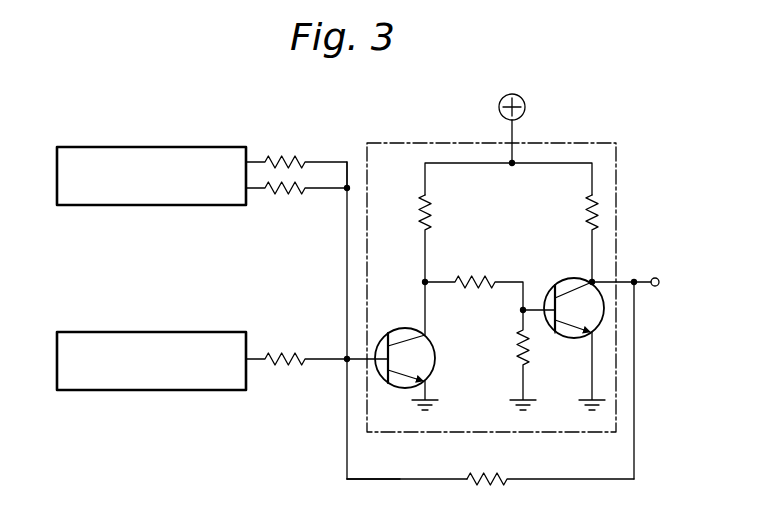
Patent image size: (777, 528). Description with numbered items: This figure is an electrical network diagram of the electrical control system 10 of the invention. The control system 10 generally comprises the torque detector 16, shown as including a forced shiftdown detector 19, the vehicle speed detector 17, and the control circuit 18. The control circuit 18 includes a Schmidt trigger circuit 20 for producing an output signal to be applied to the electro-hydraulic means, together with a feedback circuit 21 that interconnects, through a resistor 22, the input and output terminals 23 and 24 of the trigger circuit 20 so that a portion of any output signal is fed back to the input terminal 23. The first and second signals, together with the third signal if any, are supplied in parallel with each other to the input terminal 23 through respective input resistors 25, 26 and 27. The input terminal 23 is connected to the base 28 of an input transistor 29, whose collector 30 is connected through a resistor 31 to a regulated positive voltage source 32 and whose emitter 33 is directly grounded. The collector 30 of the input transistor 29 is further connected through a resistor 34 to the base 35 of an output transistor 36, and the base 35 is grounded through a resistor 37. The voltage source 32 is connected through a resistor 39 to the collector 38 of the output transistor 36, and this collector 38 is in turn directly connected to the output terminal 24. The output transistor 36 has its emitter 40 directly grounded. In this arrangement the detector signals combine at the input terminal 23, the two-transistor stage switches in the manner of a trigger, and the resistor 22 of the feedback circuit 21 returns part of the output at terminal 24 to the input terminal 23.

The electrical control system 10 is at (625, 118).
The torque detector 16 is at (151, 154).
The forced shiftdown detector 19 is at (148, 147).
The vehicle speed detector 17 is at (152, 332).
The control circuit 18 is at (628, 240).
The Schmidt trigger circuit 20 is at (600, 168).
The feedback circuit 21 is at (413, 484).
The resistor 22 is at (503, 484).
The input terminal 23 is at (345, 365).
The output terminal 24 is at (656, 287).
The input resistor 25 is at (262, 194).
The input resistor 26 is at (298, 350).
The input resistor 27 is at (300, 160).
The base 28 is at (386, 338).
The input transistor 29 is at (415, 342).
The collector 30 is at (408, 328).
The resistor 31 is at (430, 218).
The regulated positive voltage source 32 is at (526, 110).
The emitter 33 is at (418, 373).
The resistor 34 is at (482, 278).
The base 35 is at (548, 298).
The output transistor 36 is at (560, 343).
The resistor 37 is at (520, 352).
The collector 38 is at (586, 321).
The resistor 39 is at (585, 215).
The emitter 40 is at (585, 330).